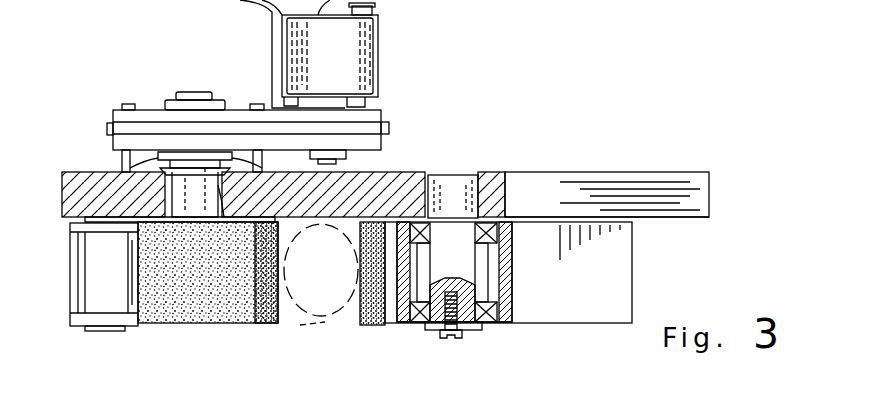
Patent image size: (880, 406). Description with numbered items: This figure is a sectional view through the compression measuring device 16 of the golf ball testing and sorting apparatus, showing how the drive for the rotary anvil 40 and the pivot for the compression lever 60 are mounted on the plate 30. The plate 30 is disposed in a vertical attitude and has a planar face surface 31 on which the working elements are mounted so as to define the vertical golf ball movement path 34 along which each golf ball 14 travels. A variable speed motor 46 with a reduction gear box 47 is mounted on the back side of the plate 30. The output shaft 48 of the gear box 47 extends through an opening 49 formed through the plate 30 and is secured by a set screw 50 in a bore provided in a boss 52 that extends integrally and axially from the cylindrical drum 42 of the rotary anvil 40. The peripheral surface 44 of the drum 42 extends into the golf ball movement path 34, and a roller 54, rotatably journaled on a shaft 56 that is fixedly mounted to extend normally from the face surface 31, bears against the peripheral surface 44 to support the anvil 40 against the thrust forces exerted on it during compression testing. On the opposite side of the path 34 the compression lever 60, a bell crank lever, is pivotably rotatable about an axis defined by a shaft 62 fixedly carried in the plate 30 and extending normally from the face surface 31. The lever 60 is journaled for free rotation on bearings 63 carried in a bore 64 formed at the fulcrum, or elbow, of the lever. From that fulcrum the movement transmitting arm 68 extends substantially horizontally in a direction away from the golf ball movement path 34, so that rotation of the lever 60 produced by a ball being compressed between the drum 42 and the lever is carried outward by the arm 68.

The golf ball 14 is at (318, 318).
The compression measuring device 16 is at (640, 172).
The plate 30 is at (555, 178).
The planar face surface 31 is at (690, 218).
The golf ball movement path 34 is at (342, 320).
The rotary anvil 40 is at (155, 293).
The cylindrical drum 42 is at (222, 325).
The peripheral surface 44 is at (259, 312).
The variable speed motor 46 is at (380, 46).
The reduction gear box 47 is at (240, 108).
The output shaft 48 is at (122, 160).
The opening 49 is at (245, 220).
The set screw 50 is at (180, 218).
The boss 52 is at (262, 160).
The roller 54 is at (78, 280).
The shaft 56 is at (338, 318).
The compression lever 60 is at (497, 295).
The shaft 62 is at (450, 190).
The bearings 63 is at (497, 240).
The bore 64 is at (487, 280).
The movement transmitting arm 68 is at (630, 292).